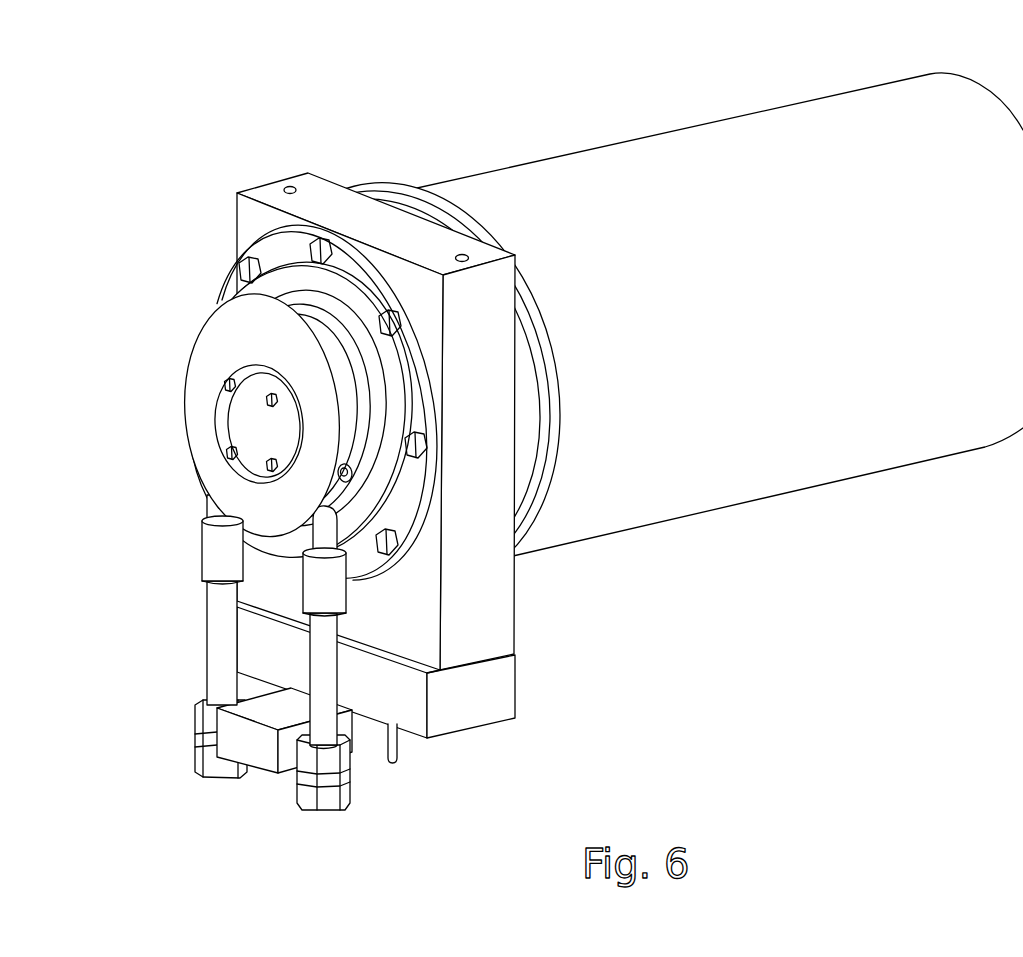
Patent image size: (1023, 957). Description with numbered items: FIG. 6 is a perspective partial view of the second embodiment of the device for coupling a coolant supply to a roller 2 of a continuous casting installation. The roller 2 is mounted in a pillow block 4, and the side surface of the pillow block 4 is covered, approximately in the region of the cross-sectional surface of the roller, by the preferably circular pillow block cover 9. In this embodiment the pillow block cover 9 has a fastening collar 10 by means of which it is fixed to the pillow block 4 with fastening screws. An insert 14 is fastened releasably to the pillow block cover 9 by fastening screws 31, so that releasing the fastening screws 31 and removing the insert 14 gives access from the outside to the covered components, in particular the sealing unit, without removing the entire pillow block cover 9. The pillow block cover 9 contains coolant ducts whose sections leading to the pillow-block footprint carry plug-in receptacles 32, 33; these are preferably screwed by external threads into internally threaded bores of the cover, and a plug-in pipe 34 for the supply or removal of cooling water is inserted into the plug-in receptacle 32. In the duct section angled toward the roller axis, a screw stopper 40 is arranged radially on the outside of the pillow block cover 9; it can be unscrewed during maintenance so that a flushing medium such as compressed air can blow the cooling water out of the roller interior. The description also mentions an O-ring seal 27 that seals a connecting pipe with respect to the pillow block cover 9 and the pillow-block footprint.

The roller 2 is at (739, 155).
The pillow block 4 is at (492, 648).
The pillow block cover 9 is at (231, 338).
The fastening collar 10 is at (280, 254).
The insert 14 is at (240, 416).
The O-ring seal 27 is at (322, 240).
The fastening screws 31 is at (230, 381).
The plug-in receptacle 32 is at (223, 555).
The plug-in receptacle 33 is at (330, 597).
The plug-in pipe 34 is at (207, 622).
The screw stopper 40 is at (350, 473).